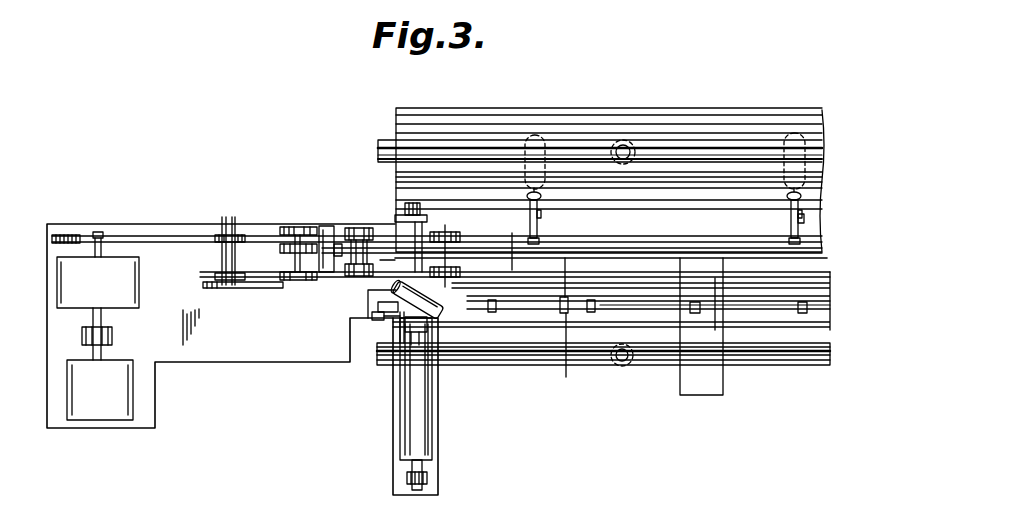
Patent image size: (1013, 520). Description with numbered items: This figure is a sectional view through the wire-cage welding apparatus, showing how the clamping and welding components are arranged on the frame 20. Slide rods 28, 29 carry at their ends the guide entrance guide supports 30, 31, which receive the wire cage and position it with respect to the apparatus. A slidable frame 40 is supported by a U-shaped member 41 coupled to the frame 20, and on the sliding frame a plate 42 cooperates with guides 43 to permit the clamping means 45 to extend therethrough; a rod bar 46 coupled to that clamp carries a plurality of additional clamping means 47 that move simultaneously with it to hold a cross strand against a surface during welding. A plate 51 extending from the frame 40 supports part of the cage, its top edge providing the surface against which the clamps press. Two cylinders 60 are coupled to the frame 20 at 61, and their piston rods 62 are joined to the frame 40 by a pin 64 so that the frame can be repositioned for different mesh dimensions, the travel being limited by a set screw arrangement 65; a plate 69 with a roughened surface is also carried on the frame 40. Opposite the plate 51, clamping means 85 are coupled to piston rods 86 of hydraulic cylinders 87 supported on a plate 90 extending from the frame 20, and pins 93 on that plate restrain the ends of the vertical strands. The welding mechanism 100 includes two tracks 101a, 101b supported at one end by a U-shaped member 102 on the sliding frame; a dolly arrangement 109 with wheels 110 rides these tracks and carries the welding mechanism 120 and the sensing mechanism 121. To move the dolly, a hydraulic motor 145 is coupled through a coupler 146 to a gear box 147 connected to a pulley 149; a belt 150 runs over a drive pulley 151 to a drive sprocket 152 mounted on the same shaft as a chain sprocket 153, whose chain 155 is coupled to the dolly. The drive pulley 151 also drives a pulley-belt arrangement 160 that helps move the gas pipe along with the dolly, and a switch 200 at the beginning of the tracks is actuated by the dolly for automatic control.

The frame 20 is at (391, 385).
The slide rod 28 is at (620, 367).
The slide rod 29 is at (624, 140).
The guide entrance guide support 30 is at (530, 350).
The guide entrance guide support 31 is at (562, 145).
The slidable frame 40 is at (287, 372).
The U-shaped member 41 is at (700, 396).
The plate 42 is at (655, 292).
The guides 43 is at (574, 297).
The clamping means 45 is at (563, 330).
The rod bar 46 is at (742, 308).
The additional clamping means 47 is at (802, 313).
The plate 51 is at (665, 328).
The cylinders 60 is at (415, 425).
The coupling of cylinders to frame 61 is at (395, 339).
The piston rods 62 is at (417, 368).
The pin 64 is at (426, 483).
The set screw arrangement 65 is at (405, 204).
The plate 69 is at (694, 288).
The clamping means 85 is at (528, 233).
The piston rods 86 is at (539, 184).
The hydraulic cylinders 87 is at (529, 134).
The plate 90 is at (715, 135).
The pins 93 is at (805, 218).
The welding mechanism 100 is at (361, 304).
The track 101a is at (712, 286).
The track 101b is at (629, 249).
The U-shaped member 102 is at (310, 277).
The dolly arrangement 109 is at (373, 220).
The wheels 110 is at (361, 232).
The welding mechanism 120 is at (447, 305).
The vertical strand free end sensing mechanism 121 is at (372, 325).
The hydraulic motor 145 is at (99, 412).
The coupler 146 is at (113, 339).
The gear box 147 is at (72, 302).
The pulley 149 is at (79, 237).
The belt 150 is at (153, 238).
The drive pulley 151 is at (221, 231).
The drive sprocket 152 is at (290, 230).
The chain sprocket 153 is at (282, 264).
The chain 155 is at (795, 258).
The pulley-belt arrangement 160 is at (216, 300).
The switch 200 is at (326, 226).